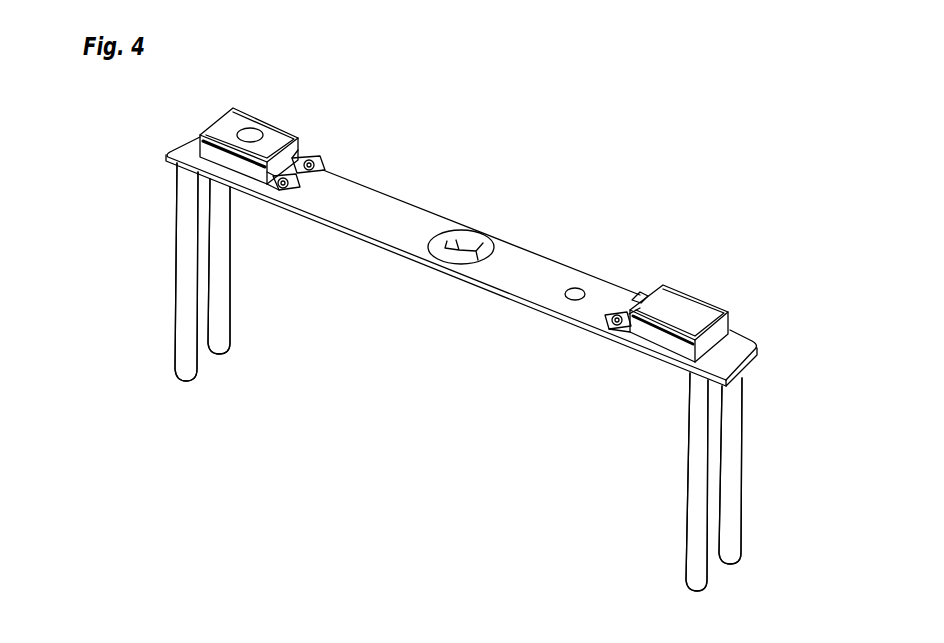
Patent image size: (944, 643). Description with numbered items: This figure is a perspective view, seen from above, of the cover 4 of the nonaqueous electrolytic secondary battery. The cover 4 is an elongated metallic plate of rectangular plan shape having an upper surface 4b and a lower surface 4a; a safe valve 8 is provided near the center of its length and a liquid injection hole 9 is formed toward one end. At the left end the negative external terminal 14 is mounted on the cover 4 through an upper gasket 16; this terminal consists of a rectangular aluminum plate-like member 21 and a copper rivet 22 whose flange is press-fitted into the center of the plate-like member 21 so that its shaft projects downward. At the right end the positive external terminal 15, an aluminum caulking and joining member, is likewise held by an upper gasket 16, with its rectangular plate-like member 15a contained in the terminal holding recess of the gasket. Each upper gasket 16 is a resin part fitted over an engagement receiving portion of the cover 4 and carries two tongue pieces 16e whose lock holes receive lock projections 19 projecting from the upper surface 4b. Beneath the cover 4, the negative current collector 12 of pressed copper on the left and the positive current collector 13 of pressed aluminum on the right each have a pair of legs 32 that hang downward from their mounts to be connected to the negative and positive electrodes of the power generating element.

The cover 4 is at (495, 262).
The lower surface 4a is at (755, 362).
The upper surface 4b is at (737, 337).
The safe valve 8 is at (466, 243).
The liquid injection hole 9 is at (576, 289).
The negative current collector 12 is at (176, 262).
The positive current collector 13 is at (742, 468).
The negative external terminal 14 is at (177, 140).
The positive external terminal 15 is at (687, 326).
The plate-like member 15a is at (667, 320).
The upper gasket 16 is at (270, 172).
The tongue pieces 16e is at (318, 162).
The lock projections 19 is at (311, 158).
The plate-like member 21 is at (206, 121).
The rivet 22 is at (241, 128).
The legs 32 is at (185, 325).